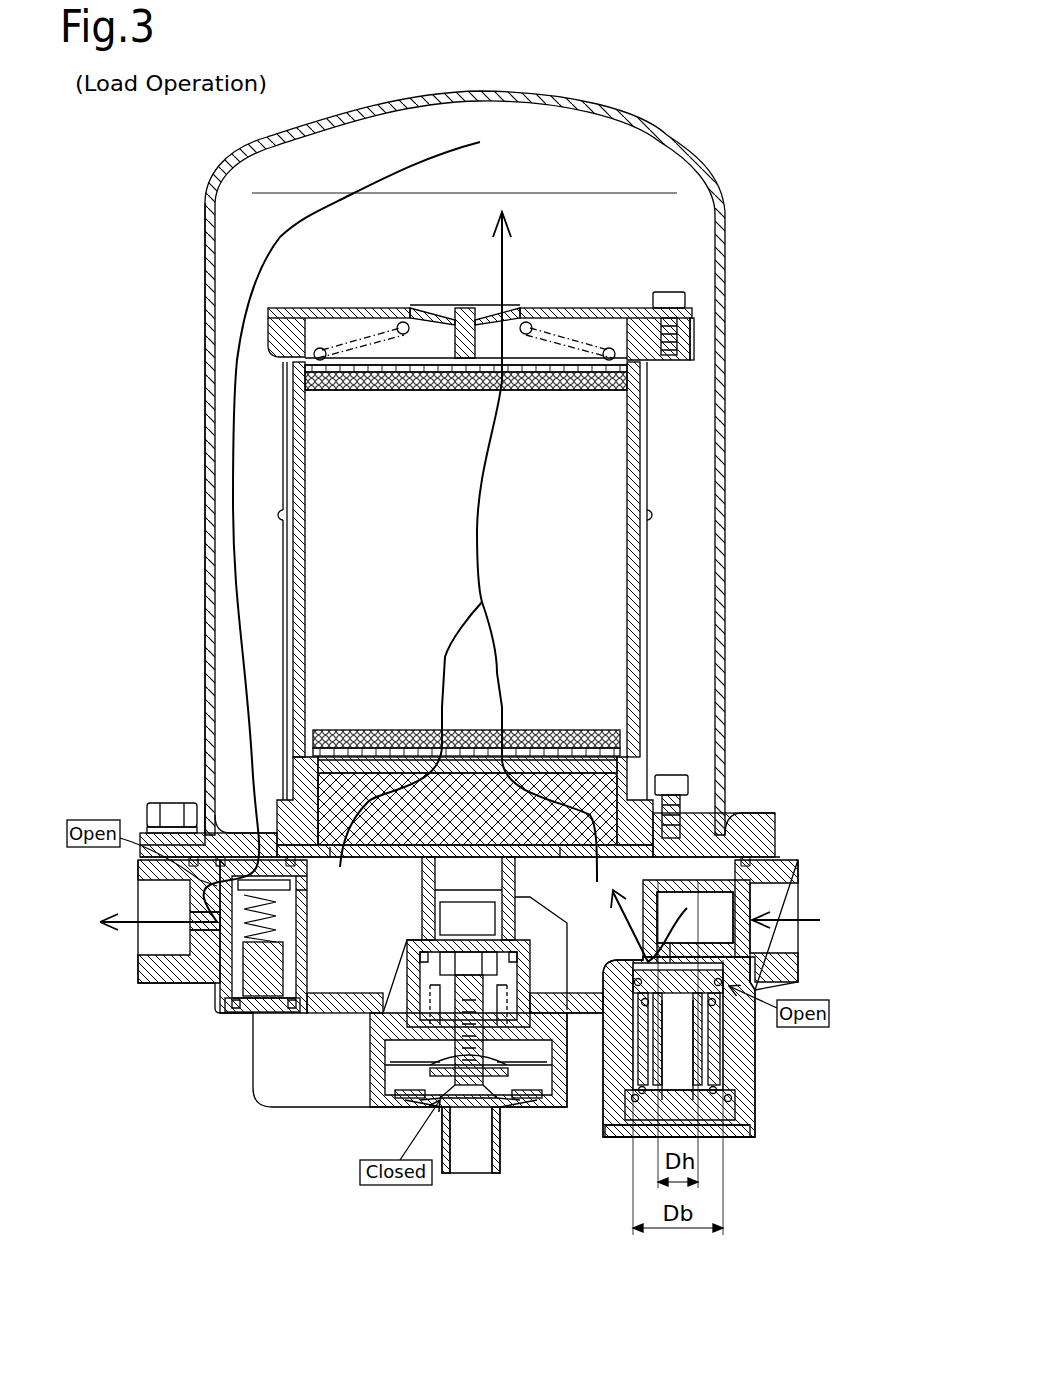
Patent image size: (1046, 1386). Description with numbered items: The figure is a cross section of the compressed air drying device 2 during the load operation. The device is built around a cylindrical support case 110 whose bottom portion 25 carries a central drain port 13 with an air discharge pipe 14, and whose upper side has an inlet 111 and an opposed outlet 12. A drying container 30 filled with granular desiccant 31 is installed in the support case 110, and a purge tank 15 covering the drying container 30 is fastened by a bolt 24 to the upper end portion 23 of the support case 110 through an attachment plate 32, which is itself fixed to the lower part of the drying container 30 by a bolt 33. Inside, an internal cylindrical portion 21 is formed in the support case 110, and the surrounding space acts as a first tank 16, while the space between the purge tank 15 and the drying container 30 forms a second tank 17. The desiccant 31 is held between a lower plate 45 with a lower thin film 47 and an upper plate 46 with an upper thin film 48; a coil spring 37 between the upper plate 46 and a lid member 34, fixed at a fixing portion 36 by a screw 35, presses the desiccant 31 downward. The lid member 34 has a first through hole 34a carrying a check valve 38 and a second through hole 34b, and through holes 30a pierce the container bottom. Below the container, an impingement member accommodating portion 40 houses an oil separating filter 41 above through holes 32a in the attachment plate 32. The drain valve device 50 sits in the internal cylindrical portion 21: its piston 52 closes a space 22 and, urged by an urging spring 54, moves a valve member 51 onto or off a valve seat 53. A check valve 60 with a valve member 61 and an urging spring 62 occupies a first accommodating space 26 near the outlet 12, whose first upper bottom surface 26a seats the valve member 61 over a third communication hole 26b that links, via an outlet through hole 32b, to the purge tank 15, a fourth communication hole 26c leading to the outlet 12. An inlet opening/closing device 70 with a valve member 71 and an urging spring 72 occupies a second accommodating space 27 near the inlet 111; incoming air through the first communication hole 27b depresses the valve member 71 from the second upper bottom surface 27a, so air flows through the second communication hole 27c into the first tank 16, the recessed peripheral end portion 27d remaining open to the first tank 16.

The compressed air drying device 2 is at (700, 133).
The outlet 12 is at (135, 944).
The drain port 13 is at (400, 1106).
The air discharge pipe 14 is at (500, 1138).
The purge tank 15 is at (727, 242).
The first tank 16 is at (589, 906).
The second tank 17 is at (535, 177).
The internal cylindrical portion 21 is at (422, 890).
The space 22 is at (480, 930).
The upper end portion 23 is at (788, 857).
The bolt 24 is at (147, 813).
The bottom portion 25 is at (253, 1075).
The first accommodating space 26 is at (300, 952).
The first upper bottom surface 26a is at (256, 845).
The third communication hole 26b is at (300, 878).
The fourth communication hole 26c is at (205, 988).
The second accommodating space 27 is at (756, 1080).
The second upper bottom surface 27a is at (690, 955).
The first communication hole 27b is at (672, 940).
The second communication hole 27c is at (614, 927).
The peripheral end portion 27d is at (790, 972).
The drying container 30 is at (652, 430).
The through holes 30a is at (430, 748).
The desiccant 31 is at (398, 392).
The attachment plate 32 is at (712, 812).
The through holes 32a is at (345, 860).
The outlet through hole 32b is at (210, 798).
The bolt 33 is at (672, 777).
The lid member 34 is at (596, 316).
The first through hole 34a is at (485, 312).
The second through hole 34b is at (388, 312).
The screw 35 is at (667, 291).
The fixing portion 36 is at (694, 342).
The coil spring 37 is at (548, 345).
The check valve 38 is at (437, 308).
The impingement member accommodating portion 40 is at (607, 768).
The oil separating filter 41 is at (322, 777).
The lower plate 45 is at (560, 735).
The upper plate 46 is at (520, 392).
The lower thin film 47 is at (590, 752).
The upper thin film 48 is at (583, 392).
The drain valve device 50 is at (543, 987).
The valve member 51 is at (395, 1069).
The piston 52 is at (418, 957).
The valve seat 53 is at (487, 1100).
The urging spring 54 is at (430, 997).
The check valve 60 is at (240, 1014).
The valve member 61 is at (297, 912).
The urging spring 62 is at (290, 934).
The inlet opening/closing device 70 is at (741, 1150).
The valve member 71 is at (676, 1000).
The urging spring 72 is at (733, 1056).
The support case 110 is at (757, 1108).
The inlet 111 is at (800, 943).